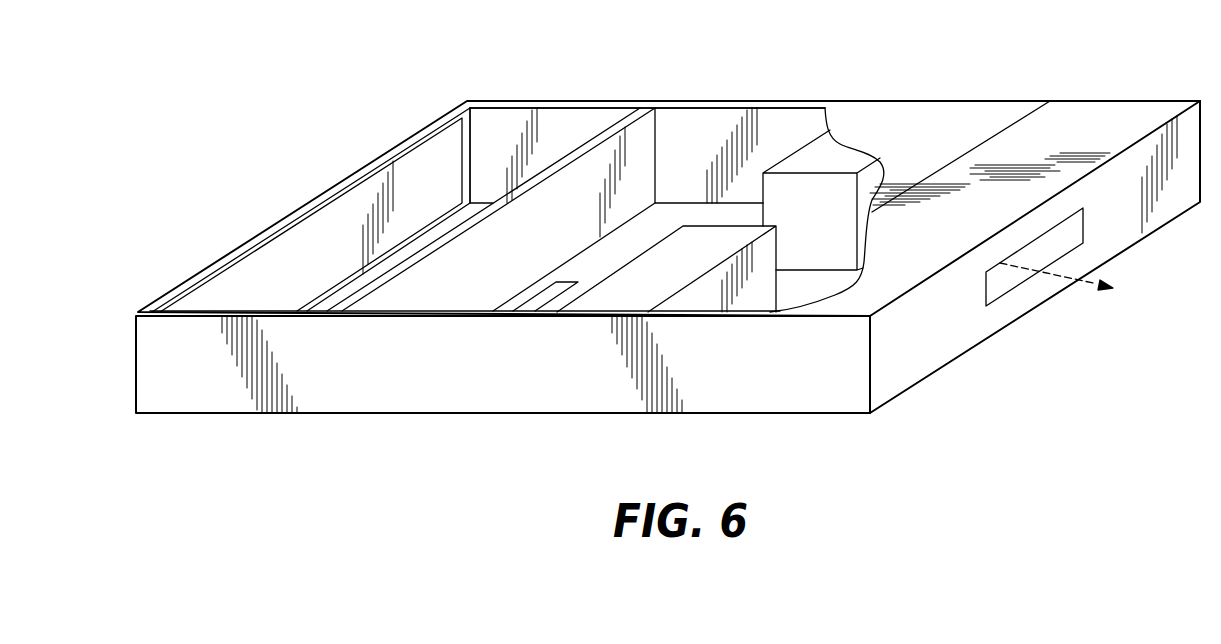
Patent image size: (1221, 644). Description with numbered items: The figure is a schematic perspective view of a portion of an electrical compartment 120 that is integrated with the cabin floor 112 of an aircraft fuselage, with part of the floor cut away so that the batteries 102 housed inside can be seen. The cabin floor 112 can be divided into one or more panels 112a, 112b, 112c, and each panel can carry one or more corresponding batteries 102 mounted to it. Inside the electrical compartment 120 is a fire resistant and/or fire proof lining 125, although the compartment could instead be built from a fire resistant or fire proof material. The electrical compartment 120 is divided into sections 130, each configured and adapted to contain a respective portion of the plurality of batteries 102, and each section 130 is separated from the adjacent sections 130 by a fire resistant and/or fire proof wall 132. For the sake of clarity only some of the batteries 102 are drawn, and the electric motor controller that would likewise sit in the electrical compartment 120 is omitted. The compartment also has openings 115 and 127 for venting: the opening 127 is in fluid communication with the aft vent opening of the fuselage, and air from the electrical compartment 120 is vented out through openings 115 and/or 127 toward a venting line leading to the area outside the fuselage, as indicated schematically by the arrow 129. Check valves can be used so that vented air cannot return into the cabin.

The batteries 102 is at (699, 272).
The cabin floor 112 is at (988, 136).
The panel 112a is at (903, 133).
The panel 112b is at (1110, 133).
The panel 112c is at (913, 272).
The opening 115 is at (556, 282).
The electrical compartment 120 is at (826, 101).
The lining 125 is at (283, 277).
The opening 127 is at (1083, 243).
The arrow 129 is at (1063, 280).
The sections 130 is at (535, 137).
The wall 132 is at (622, 120).